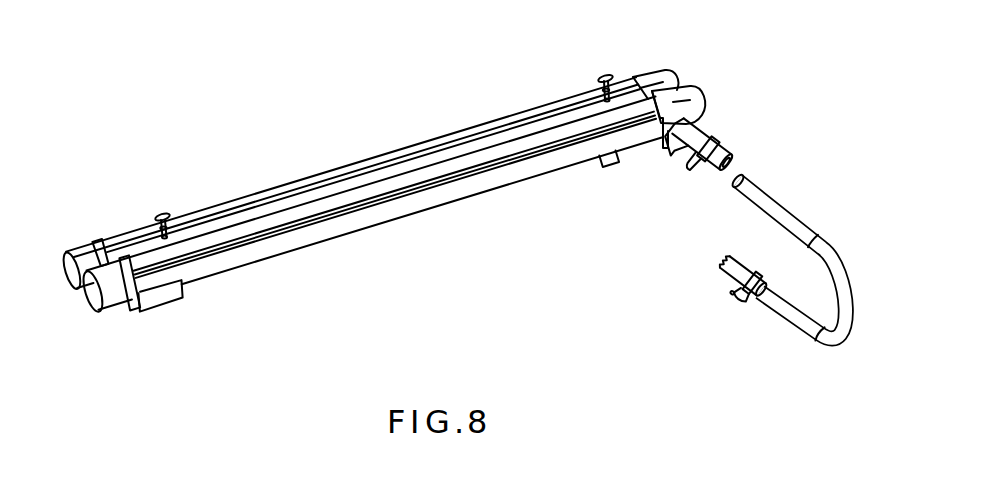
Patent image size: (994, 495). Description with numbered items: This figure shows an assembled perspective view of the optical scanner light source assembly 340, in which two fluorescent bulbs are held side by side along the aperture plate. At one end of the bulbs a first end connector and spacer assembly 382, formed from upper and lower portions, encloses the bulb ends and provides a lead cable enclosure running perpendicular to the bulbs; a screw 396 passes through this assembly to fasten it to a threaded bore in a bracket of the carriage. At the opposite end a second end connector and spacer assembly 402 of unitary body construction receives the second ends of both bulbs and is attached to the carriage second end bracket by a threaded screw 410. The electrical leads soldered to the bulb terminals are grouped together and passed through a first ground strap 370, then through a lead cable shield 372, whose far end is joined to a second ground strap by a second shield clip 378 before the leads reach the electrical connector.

The light source assembly 340 is at (233, 138).
The second end connector and spacer assembly 402 is at (113, 300).
The threaded screw 410 is at (159, 212).
The screw 396 is at (606, 73).
The first end connector and spacer assembly 382 is at (655, 71).
The first ground strap 370 is at (708, 122).
The lead cable shield 372 is at (769, 188).
The second shield clip 378 is at (733, 266).